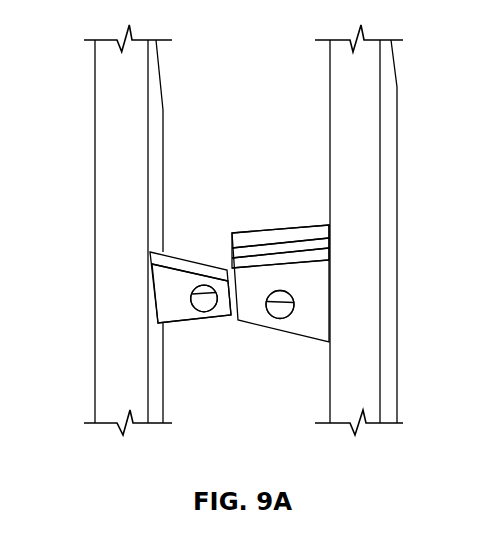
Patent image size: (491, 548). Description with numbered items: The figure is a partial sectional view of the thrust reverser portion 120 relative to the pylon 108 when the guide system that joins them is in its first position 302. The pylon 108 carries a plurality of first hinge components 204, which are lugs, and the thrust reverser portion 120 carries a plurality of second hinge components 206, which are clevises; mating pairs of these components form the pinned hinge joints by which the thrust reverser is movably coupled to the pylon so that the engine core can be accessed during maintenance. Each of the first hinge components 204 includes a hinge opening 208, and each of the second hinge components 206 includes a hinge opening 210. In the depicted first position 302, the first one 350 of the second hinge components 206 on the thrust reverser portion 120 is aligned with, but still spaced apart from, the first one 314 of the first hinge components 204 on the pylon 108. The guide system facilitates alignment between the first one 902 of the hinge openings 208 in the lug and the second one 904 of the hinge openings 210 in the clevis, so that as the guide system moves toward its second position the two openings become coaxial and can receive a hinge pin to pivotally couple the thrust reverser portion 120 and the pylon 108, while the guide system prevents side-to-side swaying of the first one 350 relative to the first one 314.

The first position 302 is at (240, 95).
The pylon 108 is at (122, 192).
The first thrust reverser portion 120 is at (367, 380).
The first hinge components 204 is at (215, 271).
The second hinge components 206 is at (275, 231).
The first one of the second hinge components 350 is at (305, 237).
The first one of the first hinge components 314 is at (175, 293).
The first one of the hinge openings 902 is at (212, 306).
The hinge opening 208 is at (196, 349).
The second one of the hinge openings 904 is at (287, 314).
The hinge opening 210 is at (269, 364).